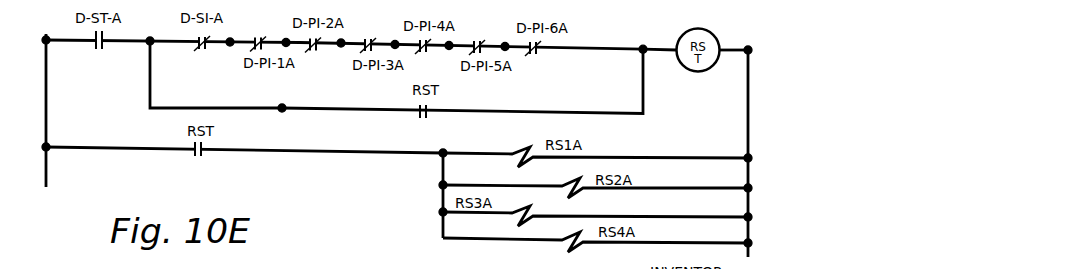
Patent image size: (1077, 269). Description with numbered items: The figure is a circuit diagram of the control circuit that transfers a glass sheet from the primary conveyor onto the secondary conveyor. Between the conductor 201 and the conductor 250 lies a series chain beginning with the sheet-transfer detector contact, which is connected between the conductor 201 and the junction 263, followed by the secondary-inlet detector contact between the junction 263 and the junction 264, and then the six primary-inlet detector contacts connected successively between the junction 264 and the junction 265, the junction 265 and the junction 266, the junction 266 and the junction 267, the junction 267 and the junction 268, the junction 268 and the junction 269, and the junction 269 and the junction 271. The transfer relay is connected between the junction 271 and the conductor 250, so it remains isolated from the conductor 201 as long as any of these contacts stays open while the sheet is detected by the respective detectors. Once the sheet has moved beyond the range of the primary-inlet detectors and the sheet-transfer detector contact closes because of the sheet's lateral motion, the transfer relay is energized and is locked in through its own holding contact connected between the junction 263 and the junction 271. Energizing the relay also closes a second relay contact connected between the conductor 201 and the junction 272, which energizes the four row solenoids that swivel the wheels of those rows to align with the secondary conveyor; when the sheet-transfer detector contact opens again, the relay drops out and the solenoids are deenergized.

The conductor 201 is at (43, 41).
The conductor 250 is at (752, 123).
The junction 263 is at (148, 43).
The junction 264 is at (229, 47).
The junction 265 is at (286, 38).
The junction 266 is at (338, 48).
The junction 267 is at (395, 40).
The junction 268 is at (448, 50).
The junction 269 is at (505, 42).
The junction 271 is at (660, 33).
The junction 272 is at (441, 151).